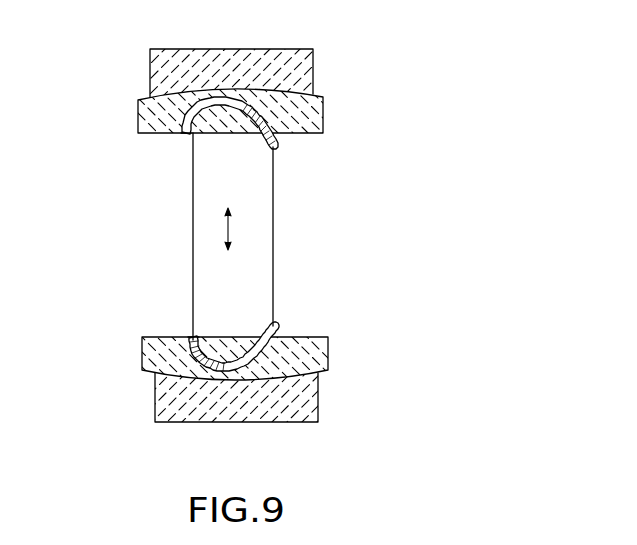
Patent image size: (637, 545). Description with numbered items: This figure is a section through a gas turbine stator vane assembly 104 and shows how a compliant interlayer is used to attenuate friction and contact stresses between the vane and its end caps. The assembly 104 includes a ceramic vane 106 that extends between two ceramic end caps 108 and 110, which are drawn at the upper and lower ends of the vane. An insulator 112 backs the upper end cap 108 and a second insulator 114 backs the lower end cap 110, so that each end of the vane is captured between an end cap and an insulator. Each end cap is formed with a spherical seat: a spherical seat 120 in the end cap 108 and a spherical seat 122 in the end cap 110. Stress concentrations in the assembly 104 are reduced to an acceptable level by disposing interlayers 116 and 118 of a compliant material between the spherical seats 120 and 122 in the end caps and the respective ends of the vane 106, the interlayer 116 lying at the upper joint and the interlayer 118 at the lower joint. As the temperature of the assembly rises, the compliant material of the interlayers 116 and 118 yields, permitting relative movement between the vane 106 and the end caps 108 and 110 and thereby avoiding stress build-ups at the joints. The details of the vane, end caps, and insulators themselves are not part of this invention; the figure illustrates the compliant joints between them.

The gas turbine stator vane assembly 104 is at (124, 96).
The ceramic vane 106 is at (193, 197).
The ceramic end cap 108 is at (323, 110).
The ceramic end cap 110 is at (329, 347).
The insulator 112 is at (313, 56).
The insulator 114 is at (318, 383).
The interlayer 116 is at (201, 103).
The interlayer 118 is at (253, 366).
The spherical seat 120 is at (264, 143).
The spherical seat 122 is at (218, 363).